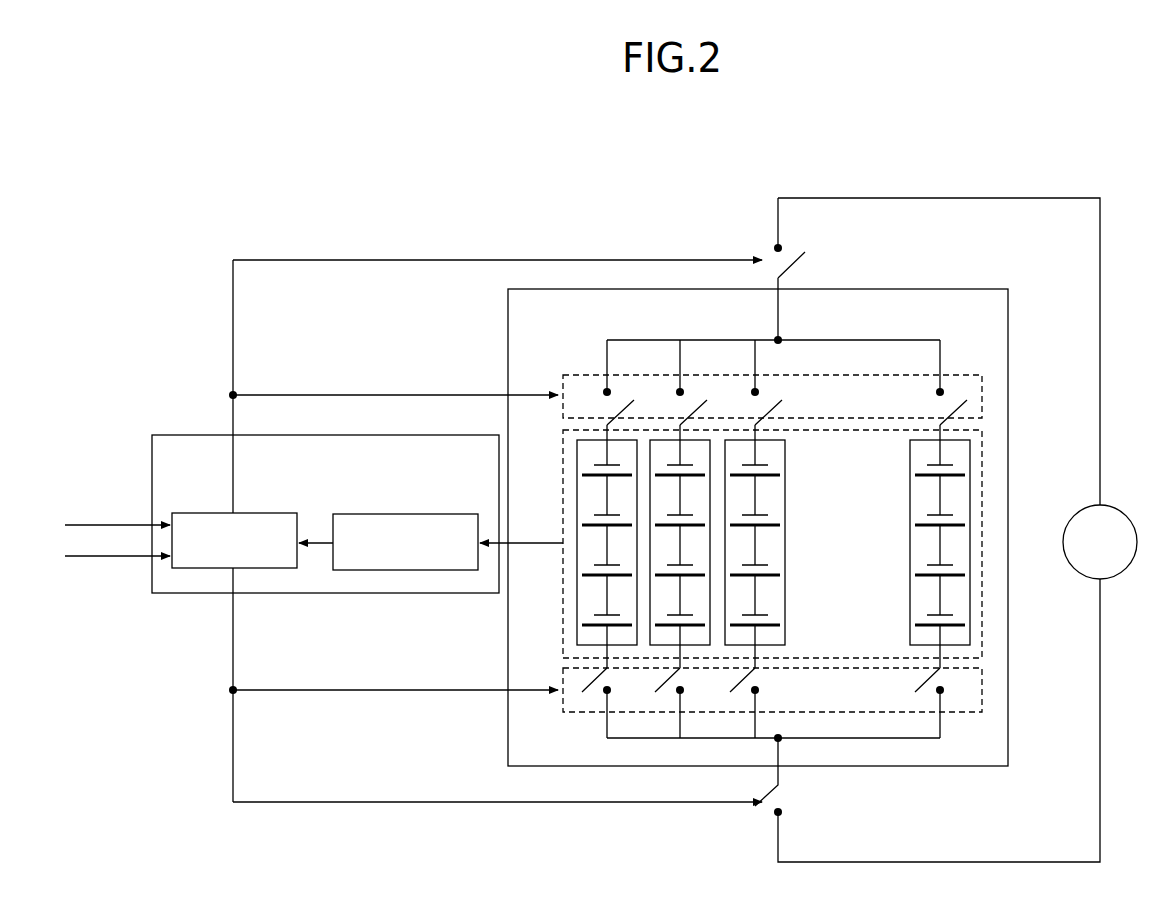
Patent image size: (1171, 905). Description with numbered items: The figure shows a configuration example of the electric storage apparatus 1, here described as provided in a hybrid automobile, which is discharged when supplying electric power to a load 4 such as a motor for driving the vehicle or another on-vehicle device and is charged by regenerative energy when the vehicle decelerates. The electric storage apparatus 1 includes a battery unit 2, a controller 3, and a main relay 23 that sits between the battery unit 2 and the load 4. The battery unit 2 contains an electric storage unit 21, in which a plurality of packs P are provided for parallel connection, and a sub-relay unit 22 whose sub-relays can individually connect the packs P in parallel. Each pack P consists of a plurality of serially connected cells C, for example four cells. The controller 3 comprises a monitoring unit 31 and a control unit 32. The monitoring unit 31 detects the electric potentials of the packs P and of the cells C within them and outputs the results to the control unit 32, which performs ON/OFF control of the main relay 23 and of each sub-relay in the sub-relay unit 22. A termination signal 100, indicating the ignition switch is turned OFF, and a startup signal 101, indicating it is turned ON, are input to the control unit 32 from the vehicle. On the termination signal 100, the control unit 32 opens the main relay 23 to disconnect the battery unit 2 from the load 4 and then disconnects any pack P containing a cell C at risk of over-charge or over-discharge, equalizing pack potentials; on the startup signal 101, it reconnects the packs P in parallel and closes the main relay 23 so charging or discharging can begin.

The electric storage apparatus 1 is at (710, 136).
The battery unit 2 is at (506, 308).
The controller 3 is at (441, 435).
The load 4 is at (1127, 521).
The electric storage unit 21 is at (985, 608).
The sub-relay unit 22 is at (985, 395).
The main relay 23 is at (814, 250).
The monitoring unit 31 is at (411, 514).
The control unit 32 is at (251, 513).
The termination signal 100 is at (105, 522).
The startup signal 101 is at (112, 560).
The cell C is at (665, 463).
The pack P is at (578, 650).